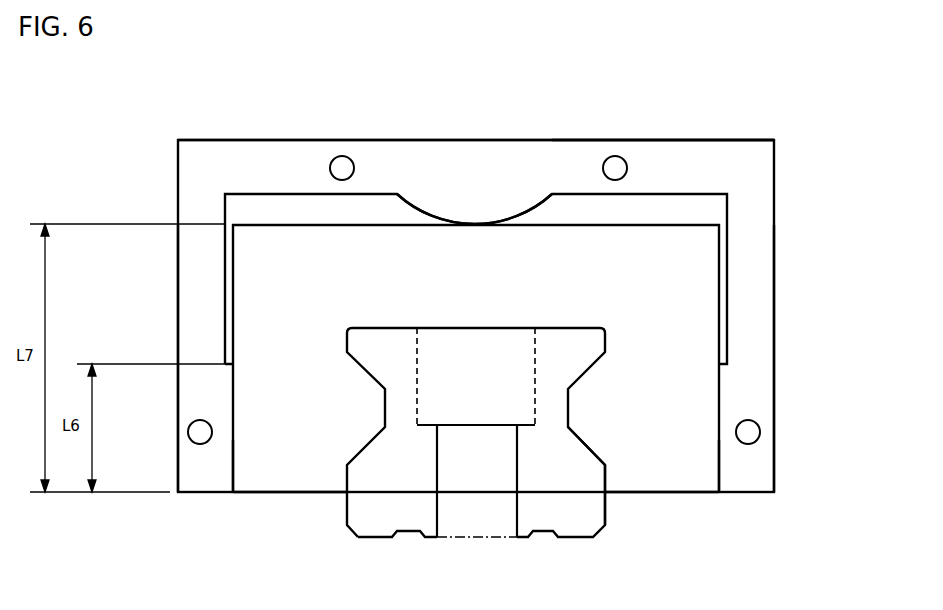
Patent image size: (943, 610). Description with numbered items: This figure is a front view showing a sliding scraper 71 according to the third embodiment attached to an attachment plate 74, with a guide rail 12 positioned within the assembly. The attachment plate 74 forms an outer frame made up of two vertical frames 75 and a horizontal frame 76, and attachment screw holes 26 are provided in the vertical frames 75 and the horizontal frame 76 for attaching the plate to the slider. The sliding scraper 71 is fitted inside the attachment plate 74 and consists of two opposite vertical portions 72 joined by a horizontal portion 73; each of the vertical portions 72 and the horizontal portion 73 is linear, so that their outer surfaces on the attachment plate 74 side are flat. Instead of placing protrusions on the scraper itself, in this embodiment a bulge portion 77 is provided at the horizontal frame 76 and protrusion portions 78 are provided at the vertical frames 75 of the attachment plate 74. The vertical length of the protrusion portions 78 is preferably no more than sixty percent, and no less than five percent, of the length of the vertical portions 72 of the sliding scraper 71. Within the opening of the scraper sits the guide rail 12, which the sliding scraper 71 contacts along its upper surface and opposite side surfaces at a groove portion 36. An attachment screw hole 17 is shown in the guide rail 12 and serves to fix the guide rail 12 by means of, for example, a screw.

The guide rail 12 is at (380, 515).
The attachment screw hole 17 is at (475, 425).
The attachment screw holes 26 is at (340, 165).
The groove portion 36 is at (588, 447).
The sliding scraper 71 is at (733, 227).
The vertical portions 72 is at (300, 475).
The horizontal portion 73 is at (287, 240).
The attachment plate 74 is at (711, 138).
The vertical frames 75 is at (197, 255).
The horizontal frame 76 is at (525, 150).
The bulge portion 77 is at (478, 213).
The protrusion portions 78 is at (233, 452).